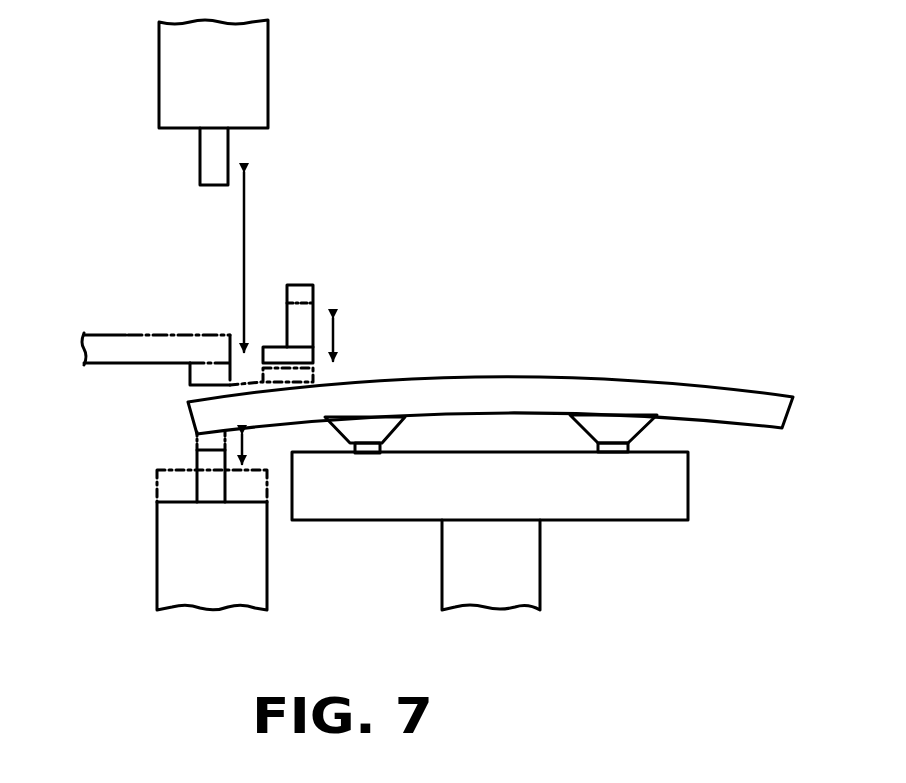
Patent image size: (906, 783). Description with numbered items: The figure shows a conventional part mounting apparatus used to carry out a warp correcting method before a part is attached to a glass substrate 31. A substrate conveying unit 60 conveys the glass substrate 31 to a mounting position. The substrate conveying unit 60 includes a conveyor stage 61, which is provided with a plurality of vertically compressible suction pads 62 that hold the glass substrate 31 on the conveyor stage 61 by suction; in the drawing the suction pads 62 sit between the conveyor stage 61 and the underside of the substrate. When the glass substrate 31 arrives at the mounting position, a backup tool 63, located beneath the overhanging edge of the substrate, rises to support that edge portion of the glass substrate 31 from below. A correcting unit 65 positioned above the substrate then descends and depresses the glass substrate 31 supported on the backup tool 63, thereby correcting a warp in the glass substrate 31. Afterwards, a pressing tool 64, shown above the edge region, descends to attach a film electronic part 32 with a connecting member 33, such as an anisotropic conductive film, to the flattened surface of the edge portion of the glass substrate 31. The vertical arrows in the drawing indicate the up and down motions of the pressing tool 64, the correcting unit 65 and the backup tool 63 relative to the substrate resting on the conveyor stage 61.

The glass substrate 31 is at (698, 390).
The film electronic part 32 is at (121, 333).
The connecting member 33 is at (188, 385).
The substrate conveying unit 60 is at (532, 512).
The conveyor stage 61 is at (603, 507).
The suction pads 62 is at (632, 425).
The backup tool 63 is at (167, 483).
The pressing tool 64 is at (252, 85).
The correcting unit 65 is at (303, 330).